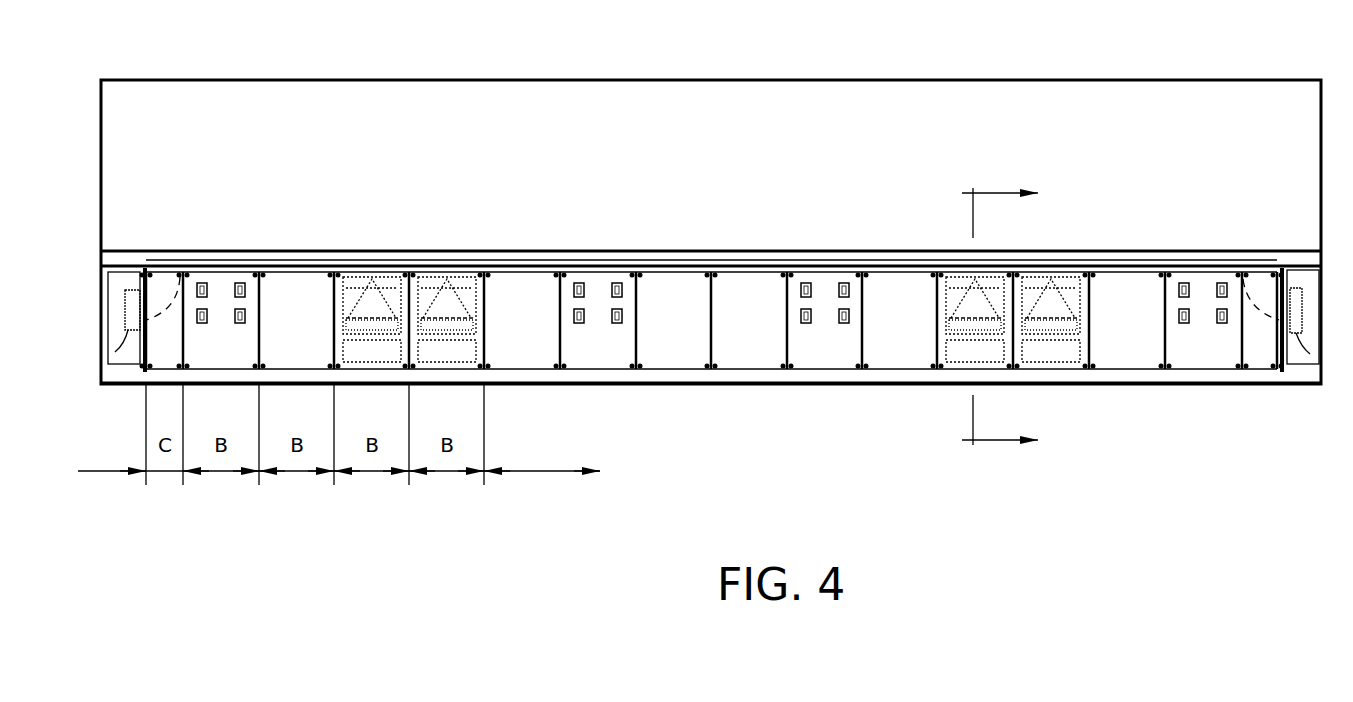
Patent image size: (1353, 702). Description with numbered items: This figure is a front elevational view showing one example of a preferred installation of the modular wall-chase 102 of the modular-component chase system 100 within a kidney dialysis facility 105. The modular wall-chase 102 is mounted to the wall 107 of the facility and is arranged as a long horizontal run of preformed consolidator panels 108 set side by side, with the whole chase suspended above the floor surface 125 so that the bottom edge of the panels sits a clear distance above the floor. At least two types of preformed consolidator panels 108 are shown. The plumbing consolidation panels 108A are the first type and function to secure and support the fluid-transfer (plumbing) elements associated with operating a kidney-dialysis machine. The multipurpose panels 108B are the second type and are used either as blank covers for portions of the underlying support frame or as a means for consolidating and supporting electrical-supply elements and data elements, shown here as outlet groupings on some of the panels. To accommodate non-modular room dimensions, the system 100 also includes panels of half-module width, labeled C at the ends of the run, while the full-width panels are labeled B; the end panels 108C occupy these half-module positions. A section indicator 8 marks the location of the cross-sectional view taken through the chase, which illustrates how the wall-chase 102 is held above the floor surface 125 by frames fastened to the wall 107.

The modular-component chase system 100 is at (540, 190).
The modular wall-chase 102 is at (610, 208).
The kidney dialysis facility 105 is at (237, 80).
The wall 107 is at (843, 144).
The preformed consolidator panels 108 is at (712, 435).
The plumbing consolidation panel 108A is at (428, 273).
The multipurpose panel 108B is at (276, 273).
The end door modules 108C is at (164, 272).
The floor surface 125 is at (1279, 385).
The section line 8- 8 is at (998, 320).